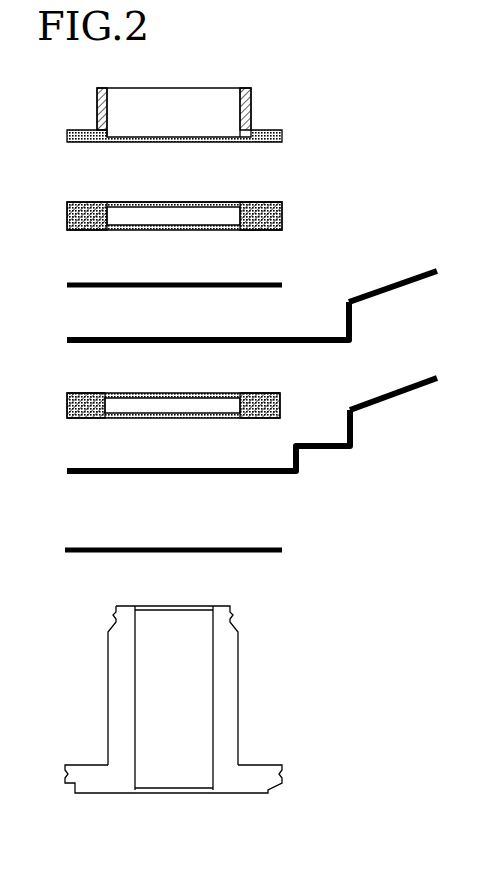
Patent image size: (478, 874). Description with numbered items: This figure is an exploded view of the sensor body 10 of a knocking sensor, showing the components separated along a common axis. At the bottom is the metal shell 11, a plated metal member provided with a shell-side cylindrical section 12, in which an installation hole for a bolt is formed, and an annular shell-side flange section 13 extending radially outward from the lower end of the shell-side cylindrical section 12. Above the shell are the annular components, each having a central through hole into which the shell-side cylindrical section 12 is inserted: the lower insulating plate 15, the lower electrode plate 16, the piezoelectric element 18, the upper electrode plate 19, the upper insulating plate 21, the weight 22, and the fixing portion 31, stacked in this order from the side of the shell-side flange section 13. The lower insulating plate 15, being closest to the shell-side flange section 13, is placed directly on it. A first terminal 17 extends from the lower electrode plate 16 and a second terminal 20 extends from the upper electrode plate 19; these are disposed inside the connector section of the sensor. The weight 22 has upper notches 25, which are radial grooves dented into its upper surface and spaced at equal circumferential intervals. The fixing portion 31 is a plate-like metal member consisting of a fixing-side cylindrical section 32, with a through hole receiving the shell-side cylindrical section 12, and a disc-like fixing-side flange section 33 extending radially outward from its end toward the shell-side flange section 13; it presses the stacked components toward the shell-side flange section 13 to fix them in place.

The sensor body 10 is at (398, 144).
The metal shell 11 is at (209, 699).
The shell-side cylindrical section 12 is at (224, 650).
The shell-side flange section 13 is at (184, 762).
The lower insulating plate 15 is at (262, 547).
The lower electrode plate 16 is at (262, 468).
The first terminal 17 is at (405, 378).
The piezoelectric element 18 is at (268, 394).
The upper electrode plate 19 is at (306, 337).
The second terminal 20 is at (406, 273).
The upper insulating plate 21 is at (272, 283).
The weight 22 is at (196, 198).
The upper notches 25 is at (268, 203).
The fixing portion 31 is at (215, 100).
The fixing-side cylindrical section 32 is at (251, 128).
The fixing-side flange section 33 is at (197, 120).